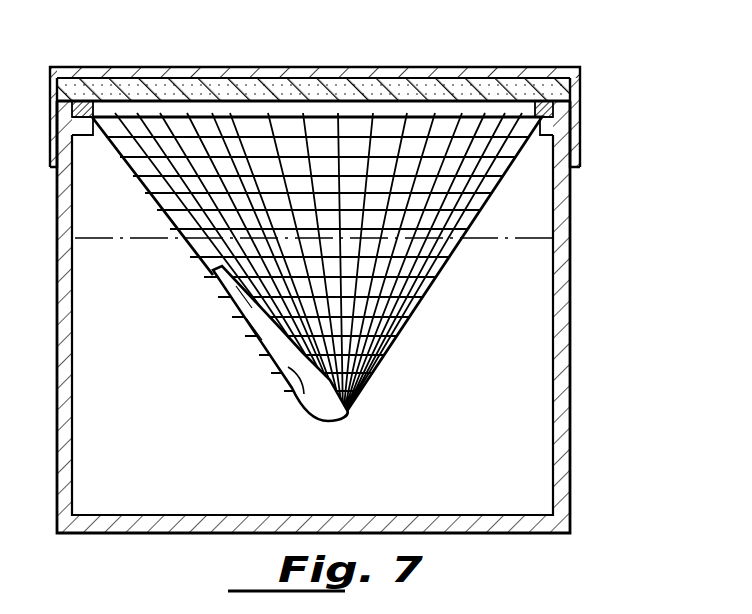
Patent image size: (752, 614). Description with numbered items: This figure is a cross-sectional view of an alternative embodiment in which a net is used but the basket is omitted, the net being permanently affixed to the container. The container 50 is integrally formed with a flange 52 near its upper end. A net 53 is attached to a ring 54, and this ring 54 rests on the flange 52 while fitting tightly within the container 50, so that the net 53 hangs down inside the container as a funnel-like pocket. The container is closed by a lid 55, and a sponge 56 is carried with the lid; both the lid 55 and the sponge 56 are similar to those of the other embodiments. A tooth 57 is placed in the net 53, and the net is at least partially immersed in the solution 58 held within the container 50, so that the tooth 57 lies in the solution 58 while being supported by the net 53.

The container 50 is at (560, 343).
The flange 52 is at (544, 128).
The net 53 is at (418, 289).
The ring 54 is at (80, 76).
The lid 55 is at (225, 74).
The sponge 56 is at (347, 88).
The tooth 57 is at (278, 340).
The solution 58 is at (522, 425).